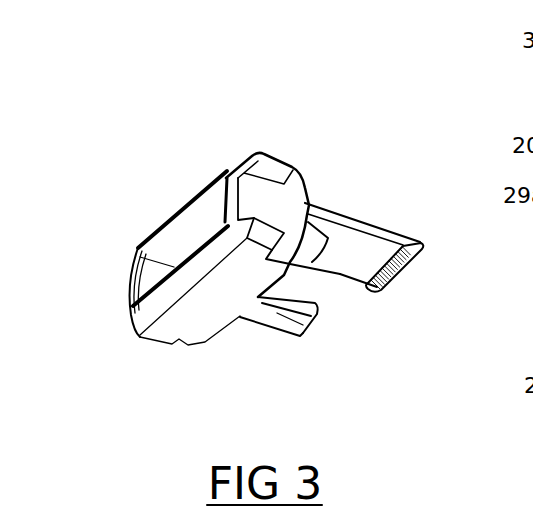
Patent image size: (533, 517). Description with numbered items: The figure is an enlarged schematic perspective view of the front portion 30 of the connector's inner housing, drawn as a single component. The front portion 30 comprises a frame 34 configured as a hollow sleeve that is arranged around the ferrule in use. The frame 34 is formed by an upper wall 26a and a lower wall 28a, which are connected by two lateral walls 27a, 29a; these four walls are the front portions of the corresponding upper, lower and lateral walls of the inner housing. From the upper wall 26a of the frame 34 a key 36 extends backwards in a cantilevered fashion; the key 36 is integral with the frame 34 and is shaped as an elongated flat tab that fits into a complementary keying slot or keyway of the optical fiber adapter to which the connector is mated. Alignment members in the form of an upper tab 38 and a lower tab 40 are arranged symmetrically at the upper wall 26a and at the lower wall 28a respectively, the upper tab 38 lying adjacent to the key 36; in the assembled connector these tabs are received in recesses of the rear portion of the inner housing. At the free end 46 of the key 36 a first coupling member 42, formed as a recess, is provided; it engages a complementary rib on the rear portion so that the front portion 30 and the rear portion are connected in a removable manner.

The front portion 30 is at (189, 70).
The upper wall 26a is at (203, 193).
The frame 34 is at (150, 240).
The lateral wall 29a is at (128, 290).
The lower wall 28a is at (200, 312).
The lateral wall 27a is at (263, 197).
The upper tab 38 is at (317, 240).
The key 36 is at (355, 250).
The free end 46 is at (415, 255).
The first coupling member 42 is at (373, 283).
The lower tab 40 is at (302, 332).